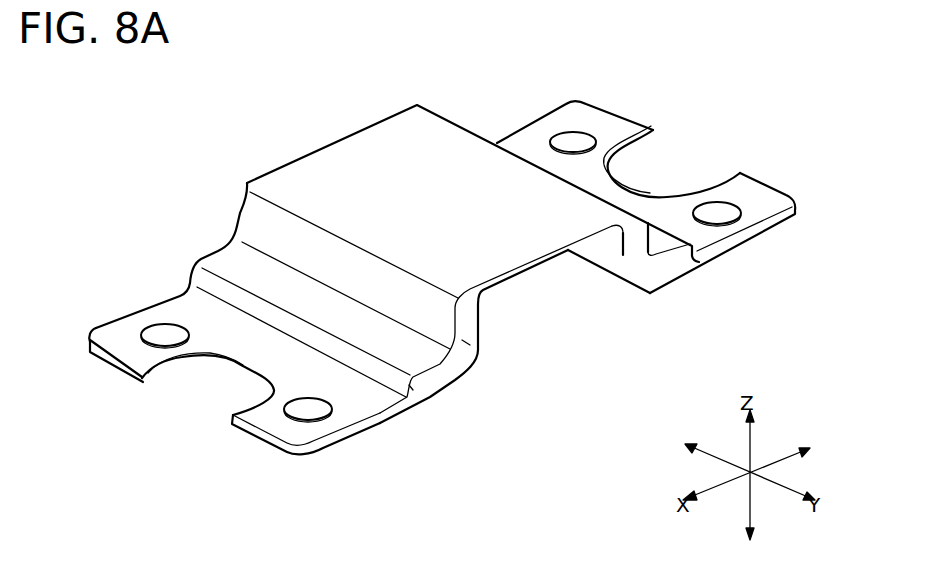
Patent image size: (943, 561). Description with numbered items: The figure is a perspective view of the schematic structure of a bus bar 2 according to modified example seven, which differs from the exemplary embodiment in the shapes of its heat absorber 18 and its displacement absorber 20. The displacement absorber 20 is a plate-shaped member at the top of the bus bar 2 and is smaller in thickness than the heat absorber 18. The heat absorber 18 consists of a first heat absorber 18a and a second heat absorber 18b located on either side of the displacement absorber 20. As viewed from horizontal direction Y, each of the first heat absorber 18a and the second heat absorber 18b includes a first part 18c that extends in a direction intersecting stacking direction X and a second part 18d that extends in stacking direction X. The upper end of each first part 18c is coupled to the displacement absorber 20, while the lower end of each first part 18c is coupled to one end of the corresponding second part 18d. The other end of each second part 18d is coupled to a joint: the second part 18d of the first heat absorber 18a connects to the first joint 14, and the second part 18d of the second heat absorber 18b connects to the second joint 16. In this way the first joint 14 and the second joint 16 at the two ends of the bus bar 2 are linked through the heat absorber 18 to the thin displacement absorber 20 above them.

The bus bar 2 is at (513, 514).
The first joint 14 is at (107, 323).
The second joint 16 is at (590, 98).
The heat absorber 18 is at (471, 376).
The first heat absorber 18a is at (496, 324).
The second heat absorber 18b is at (629, 258).
The first part 18c is at (468, 331).
The second part 18d is at (430, 380).
The displacement absorber 20 is at (340, 133).